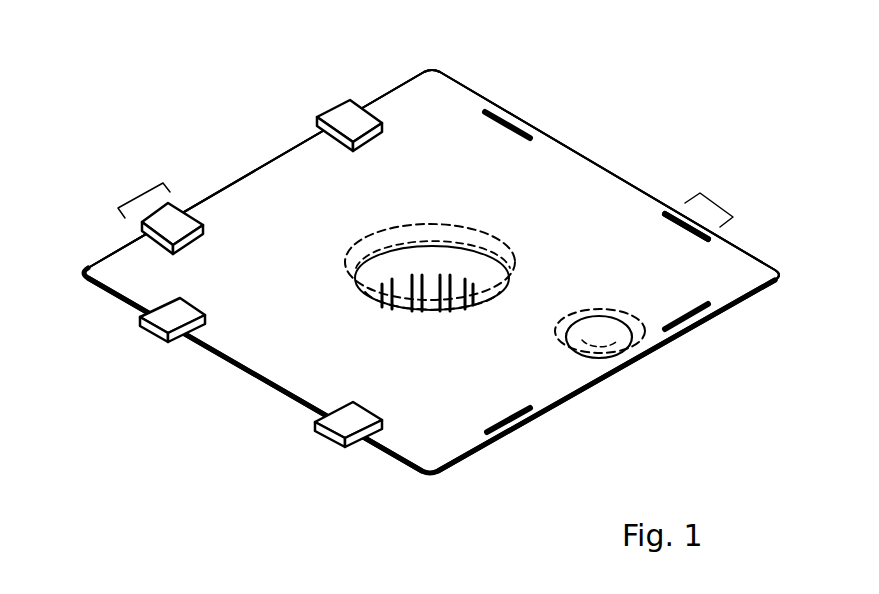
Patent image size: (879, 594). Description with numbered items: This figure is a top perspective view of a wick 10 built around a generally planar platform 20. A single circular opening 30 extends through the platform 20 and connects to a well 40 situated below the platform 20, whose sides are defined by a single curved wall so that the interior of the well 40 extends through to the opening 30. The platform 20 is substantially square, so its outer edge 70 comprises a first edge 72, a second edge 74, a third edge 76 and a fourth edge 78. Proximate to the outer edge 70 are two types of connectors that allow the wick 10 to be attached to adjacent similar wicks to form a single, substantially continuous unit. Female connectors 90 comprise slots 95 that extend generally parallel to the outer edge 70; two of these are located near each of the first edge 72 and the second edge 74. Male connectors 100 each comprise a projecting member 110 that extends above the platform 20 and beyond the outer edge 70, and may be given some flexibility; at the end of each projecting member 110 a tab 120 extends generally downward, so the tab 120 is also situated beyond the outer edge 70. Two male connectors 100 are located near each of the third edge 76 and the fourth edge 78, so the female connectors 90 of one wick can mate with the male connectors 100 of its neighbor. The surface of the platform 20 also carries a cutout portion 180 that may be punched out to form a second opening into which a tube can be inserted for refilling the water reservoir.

The wick 10 is at (640, 145).
The platform 20 is at (433, 450).
The opening 30 is at (438, 232).
The well 40 is at (432, 264).
The outer edge 70 is at (100, 300).
The first edge 72 is at (590, 392).
The second edge 74 is at (593, 157).
The third edge 76 is at (255, 165).
The fourth edge 78 is at (247, 380).
The female connector 90 is at (718, 202).
The slot 95 is at (678, 230).
The male connector 100 is at (142, 195).
The projecting member 110 is at (347, 117).
The tab 120 is at (155, 345).
The cutout portion 180 is at (633, 352).